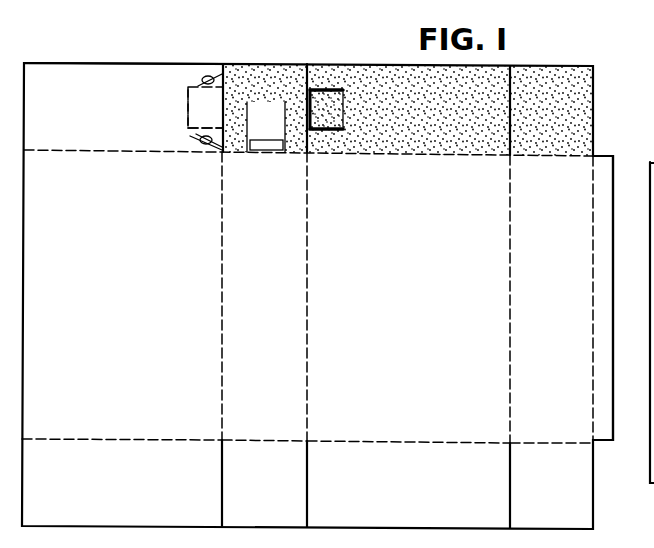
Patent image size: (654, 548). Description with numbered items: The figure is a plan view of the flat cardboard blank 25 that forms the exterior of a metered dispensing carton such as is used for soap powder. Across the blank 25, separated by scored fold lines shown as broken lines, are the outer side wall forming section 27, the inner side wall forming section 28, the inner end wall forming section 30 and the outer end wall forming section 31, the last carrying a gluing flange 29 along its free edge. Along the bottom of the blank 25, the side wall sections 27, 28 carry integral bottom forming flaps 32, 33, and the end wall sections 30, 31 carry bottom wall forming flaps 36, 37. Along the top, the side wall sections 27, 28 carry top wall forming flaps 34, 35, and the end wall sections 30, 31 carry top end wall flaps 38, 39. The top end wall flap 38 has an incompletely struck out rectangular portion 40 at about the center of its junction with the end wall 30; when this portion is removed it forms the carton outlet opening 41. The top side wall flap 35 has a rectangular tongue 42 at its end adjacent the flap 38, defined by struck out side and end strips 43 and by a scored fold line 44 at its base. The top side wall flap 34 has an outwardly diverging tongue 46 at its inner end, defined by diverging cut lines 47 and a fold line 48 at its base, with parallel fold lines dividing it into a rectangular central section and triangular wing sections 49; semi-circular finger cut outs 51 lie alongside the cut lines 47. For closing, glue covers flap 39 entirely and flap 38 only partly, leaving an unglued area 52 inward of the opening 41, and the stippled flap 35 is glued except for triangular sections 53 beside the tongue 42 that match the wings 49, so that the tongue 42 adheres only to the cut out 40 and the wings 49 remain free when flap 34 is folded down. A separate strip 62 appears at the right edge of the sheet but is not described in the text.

The cardboard blank 25 is at (409, 293).
The outer side wall forming section 27 is at (169, 296).
The inner side wall forming section 28 is at (447, 299).
The gluing flange 29 is at (613, 252).
The inner end wall forming section 30 is at (276, 296).
The outer end wall forming section 31 is at (564, 298).
The bottom forming flap 32 is at (114, 522).
The bottom forming flap 33 is at (405, 523).
The top wall forming flap 34 is at (106, 70).
The top wall forming flap 35 is at (381, 66).
The bottom wall forming flap 36 is at (264, 522).
The bottom wall forming flap 37 is at (562, 524).
The top end wall flap 38 is at (280, 76).
The top end wall flap 39 is at (553, 72).
The incompletely struck out rectangular portion 40 is at (272, 150).
The carton outlet opening 41 is at (258, 146).
The rectangular tongue 42 is at (331, 132).
The struck out side strips and end strip 43 is at (331, 86).
The scored fold line 44 is at (343, 112).
The outwardly diverging tongue 46 is at (214, 84).
The diverging cut lines 47 is at (198, 84).
The fold line 48 is at (190, 108).
The triangular wing sections 49 is at (222, 82).
The semi-circular finger cut outs 51 is at (205, 146).
The unglued area 52 is at (283, 136).
The triangular sections 53 is at (314, 84).
The closure strip 62 is at (642, 340).